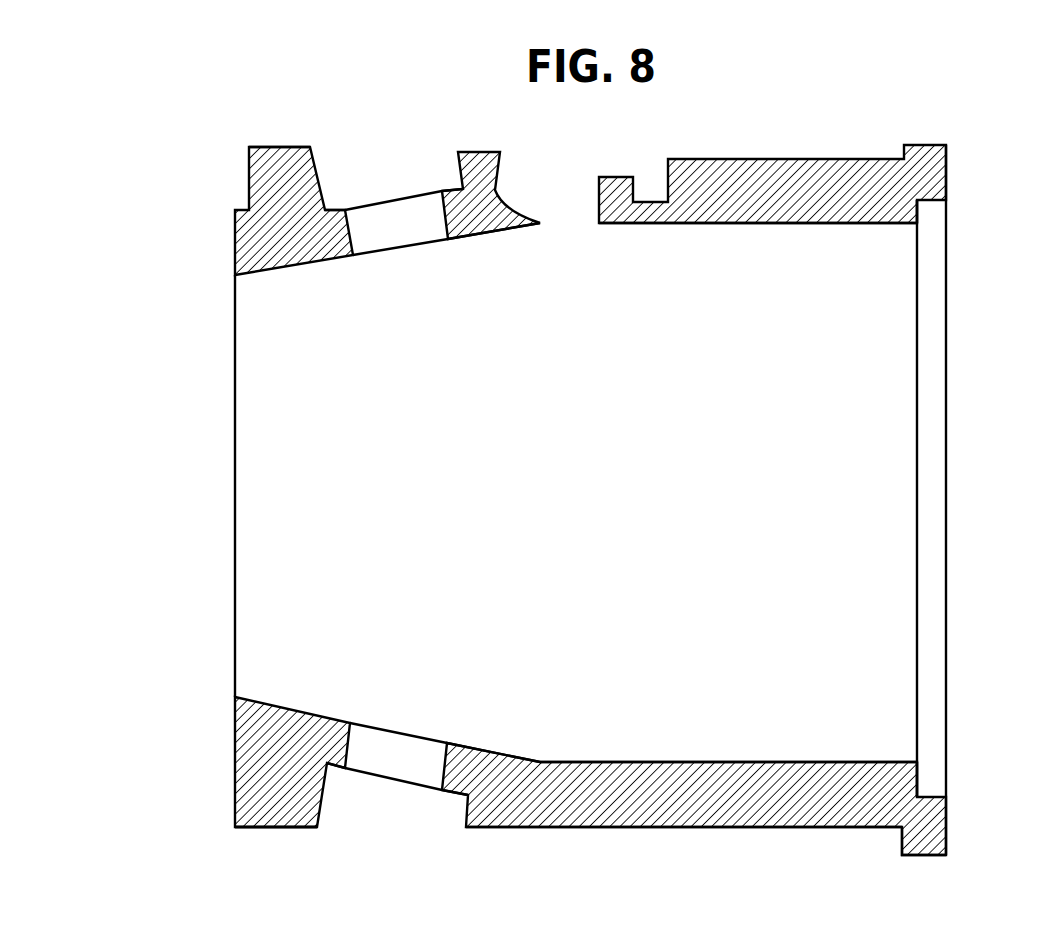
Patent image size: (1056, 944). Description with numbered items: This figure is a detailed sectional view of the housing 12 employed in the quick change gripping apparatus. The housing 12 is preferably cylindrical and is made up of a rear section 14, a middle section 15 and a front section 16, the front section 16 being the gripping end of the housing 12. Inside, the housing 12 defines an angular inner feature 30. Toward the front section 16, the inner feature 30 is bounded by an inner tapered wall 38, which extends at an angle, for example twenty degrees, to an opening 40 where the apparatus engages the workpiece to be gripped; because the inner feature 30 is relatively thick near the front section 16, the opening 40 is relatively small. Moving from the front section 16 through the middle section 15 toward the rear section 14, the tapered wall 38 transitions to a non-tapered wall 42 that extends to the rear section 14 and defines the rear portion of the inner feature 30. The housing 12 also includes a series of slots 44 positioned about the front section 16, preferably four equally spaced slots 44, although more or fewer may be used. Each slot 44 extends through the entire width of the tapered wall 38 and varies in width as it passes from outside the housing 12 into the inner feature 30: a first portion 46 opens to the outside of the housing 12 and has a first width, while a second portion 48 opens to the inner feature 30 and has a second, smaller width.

The housing 12 is at (977, 142).
The rear section 14 is at (946, 857).
The middle section 15 is at (593, 827).
The front section 16 is at (235, 826).
The inner feature 30 is at (613, 450).
The tapered wall 38 is at (497, 238).
The opening 40 is at (213, 463).
The non-tapered wall 42 is at (902, 225).
The slot 44 is at (353, 140).
The first portion 46 is at (408, 184).
The second portion 48 is at (408, 237).